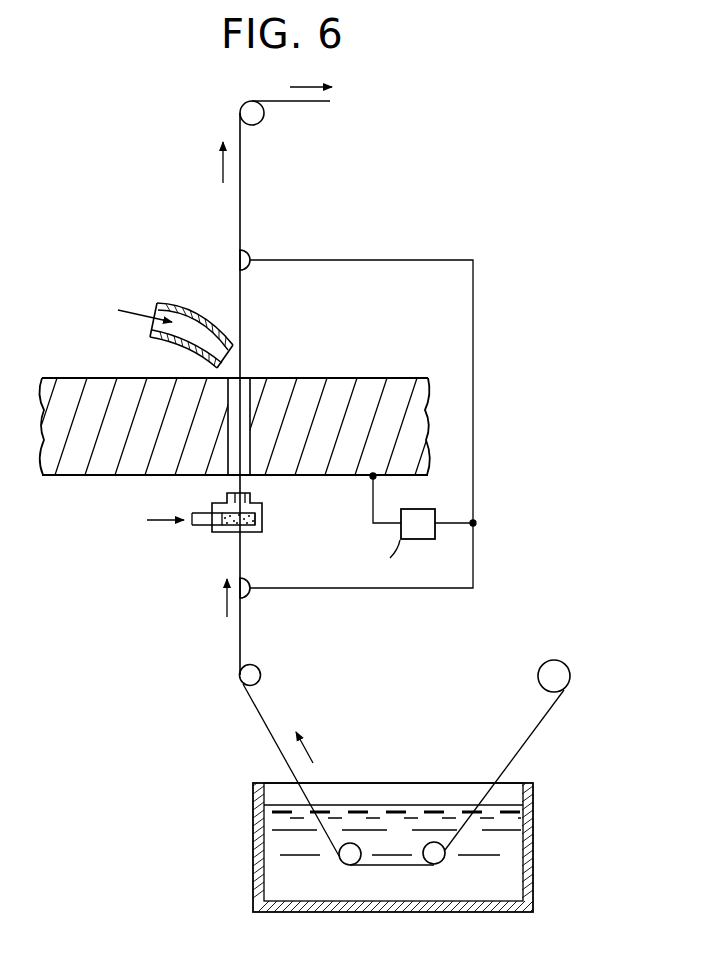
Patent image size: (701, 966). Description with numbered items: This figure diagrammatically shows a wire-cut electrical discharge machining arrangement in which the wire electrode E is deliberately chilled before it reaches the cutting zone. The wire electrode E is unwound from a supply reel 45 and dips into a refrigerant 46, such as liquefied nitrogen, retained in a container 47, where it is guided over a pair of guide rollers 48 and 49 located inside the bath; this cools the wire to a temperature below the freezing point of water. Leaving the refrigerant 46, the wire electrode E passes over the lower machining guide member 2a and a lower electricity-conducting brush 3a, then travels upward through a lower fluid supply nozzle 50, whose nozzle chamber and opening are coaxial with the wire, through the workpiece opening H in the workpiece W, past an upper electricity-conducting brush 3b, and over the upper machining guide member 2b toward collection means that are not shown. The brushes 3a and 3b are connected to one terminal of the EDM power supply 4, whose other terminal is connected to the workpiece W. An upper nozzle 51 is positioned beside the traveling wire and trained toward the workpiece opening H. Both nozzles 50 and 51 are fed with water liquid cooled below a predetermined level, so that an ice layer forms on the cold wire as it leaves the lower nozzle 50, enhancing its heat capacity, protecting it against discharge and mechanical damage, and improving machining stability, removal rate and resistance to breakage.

The wire electrode E is at (238, 634).
The lower machining guide member 2a is at (262, 672).
The upper machining guide member 2b is at (262, 121).
The lower electricity-conducting brush 3a is at (249, 582).
The upper electricity-conducting brush 3b is at (250, 254).
The EDM power supply 4 is at (420, 540).
The workpiece W is at (54, 477).
The workpiece opening H is at (244, 385).
The lower fluid supply nozzle 50 is at (222, 535).
The upper nozzle 51 is at (190, 325).
The supply reel 45 is at (556, 665).
The refrigerant 46 is at (393, 812).
The container 47 is at (534, 821).
The guide roller 48 is at (440, 860).
The guide roller 49 is at (340, 860).